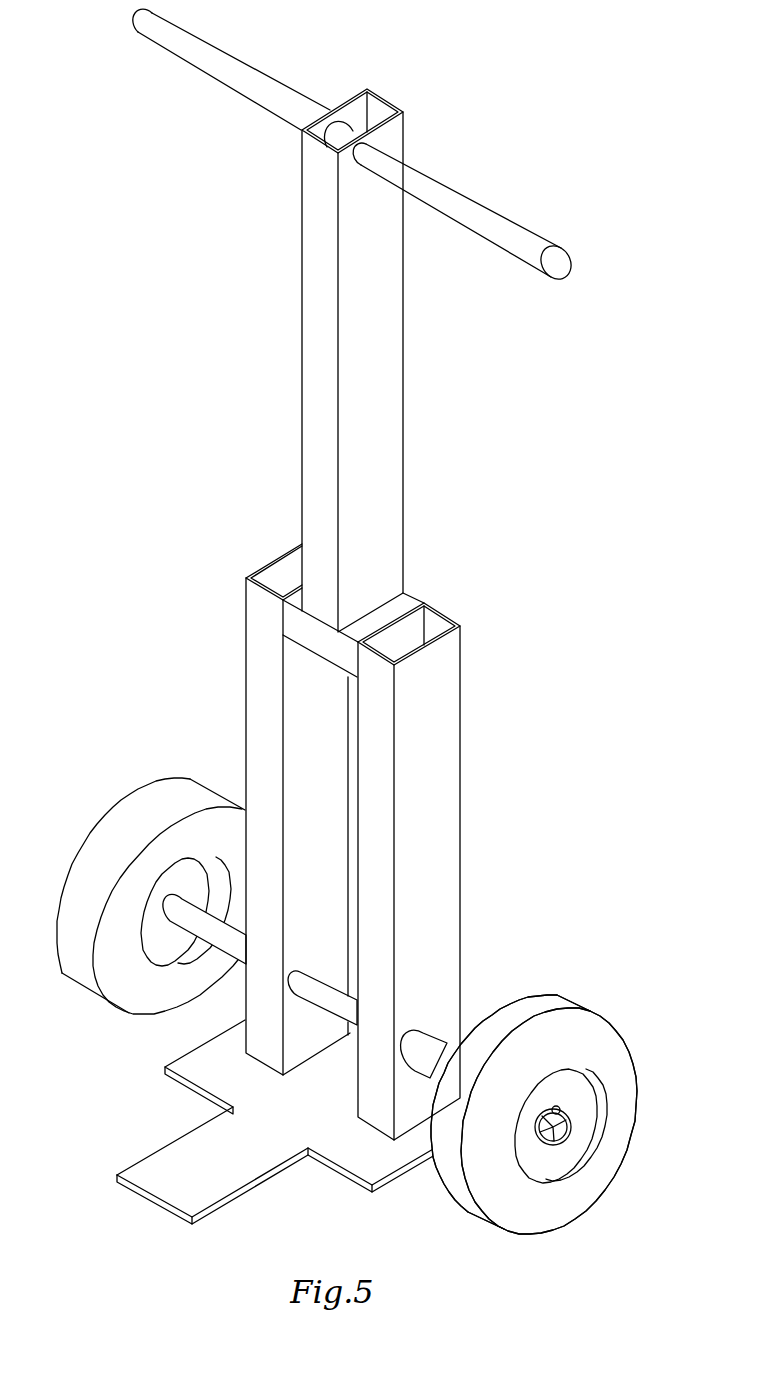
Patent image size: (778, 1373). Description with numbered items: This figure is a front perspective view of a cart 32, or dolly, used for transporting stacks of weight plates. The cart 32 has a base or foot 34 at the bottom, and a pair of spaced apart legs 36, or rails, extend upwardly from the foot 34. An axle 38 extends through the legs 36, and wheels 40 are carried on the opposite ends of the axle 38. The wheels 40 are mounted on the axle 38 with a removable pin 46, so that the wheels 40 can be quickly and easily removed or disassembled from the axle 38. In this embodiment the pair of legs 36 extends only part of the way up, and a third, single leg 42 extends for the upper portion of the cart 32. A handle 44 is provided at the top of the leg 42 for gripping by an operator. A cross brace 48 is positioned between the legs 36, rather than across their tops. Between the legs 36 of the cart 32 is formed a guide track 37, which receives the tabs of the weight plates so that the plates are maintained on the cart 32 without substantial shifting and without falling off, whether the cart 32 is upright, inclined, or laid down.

The cart 32 is at (124, 677).
The base 34 is at (147, 1167).
The legs 36 is at (255, 737).
The guide track 37 is at (315, 1093).
The axle 38 is at (433, 1047).
The wheels 40 is at (147, 802).
The third, single leg 42 is at (388, 437).
The handle 44 is at (473, 207).
The removable pin 46 is at (565, 1115).
The cross brace 48 is at (297, 623).